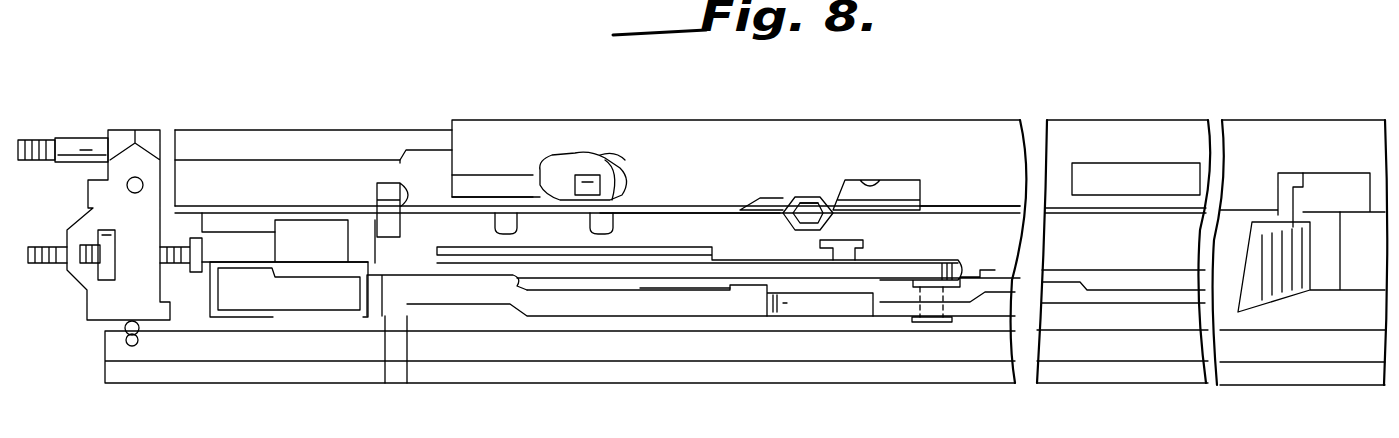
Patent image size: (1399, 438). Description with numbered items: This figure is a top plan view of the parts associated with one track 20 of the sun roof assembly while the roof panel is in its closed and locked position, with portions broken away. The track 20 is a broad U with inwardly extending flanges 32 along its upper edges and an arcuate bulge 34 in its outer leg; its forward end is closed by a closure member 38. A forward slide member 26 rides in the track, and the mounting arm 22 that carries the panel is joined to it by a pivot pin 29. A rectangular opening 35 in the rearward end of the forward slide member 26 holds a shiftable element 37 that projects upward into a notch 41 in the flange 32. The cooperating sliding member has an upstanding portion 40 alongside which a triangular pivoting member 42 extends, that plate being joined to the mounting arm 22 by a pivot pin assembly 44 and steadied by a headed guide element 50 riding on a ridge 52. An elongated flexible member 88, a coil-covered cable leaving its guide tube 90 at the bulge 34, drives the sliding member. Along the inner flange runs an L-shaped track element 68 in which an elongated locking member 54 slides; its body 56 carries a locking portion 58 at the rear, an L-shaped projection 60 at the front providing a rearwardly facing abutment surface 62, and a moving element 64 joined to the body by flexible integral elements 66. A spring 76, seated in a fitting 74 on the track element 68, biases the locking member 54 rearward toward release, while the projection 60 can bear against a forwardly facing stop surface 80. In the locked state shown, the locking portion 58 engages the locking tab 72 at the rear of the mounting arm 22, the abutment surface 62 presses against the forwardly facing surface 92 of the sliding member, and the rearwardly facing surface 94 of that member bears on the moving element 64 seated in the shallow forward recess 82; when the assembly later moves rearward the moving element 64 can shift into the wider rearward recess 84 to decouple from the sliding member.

The track 20 is at (658, 385).
The mounting arm 22 is at (1224, 264).
The forward slide member 26 is at (620, 153).
The pivot pin 29 is at (243, 263).
The flanges 32 is at (238, 178).
The arcuate bulge 34 is at (317, 142).
The rectangular opening 35 is at (583, 190).
The shiftable element 37 is at (593, 177).
The closure member 38 is at (98, 208).
The upstanding portion 40 is at (633, 227).
The notch or recess 41 is at (572, 165).
The pivoting member 42 is at (880, 267).
The pivot pin assembly 44 is at (935, 322).
The headed guide element 50 is at (820, 242).
The ridge 52 is at (497, 253).
The locking member 54 is at (428, 157).
The elongated body 56 is at (443, 183).
The locking portion 58 is at (1335, 222).
The L-shaped projection 60 is at (510, 160).
The rearwardly facing abutment surface 62 is at (400, 186).
The moving element 64 is at (813, 202).
The elongated flexible integral elements 66 is at (880, 207).
The track element 68 is at (752, 130).
The locking tab 72 is at (1298, 183).
The fitting 74 is at (1155, 162).
The spring 76 is at (1283, 173).
The stop surface 80 is at (640, 185).
The forward recess 82 is at (767, 200).
The rearward recess 84 is at (880, 187).
The elongated flexible member 88 is at (43, 137).
The guide tube 90 is at (82, 138).
The forwardly facing surface 92 is at (398, 220).
The rearwardly facing surface 94 is at (803, 202).